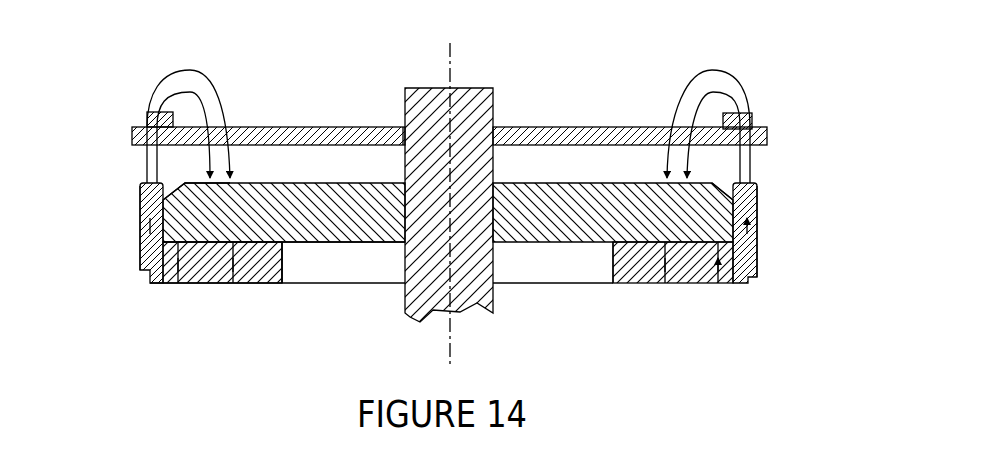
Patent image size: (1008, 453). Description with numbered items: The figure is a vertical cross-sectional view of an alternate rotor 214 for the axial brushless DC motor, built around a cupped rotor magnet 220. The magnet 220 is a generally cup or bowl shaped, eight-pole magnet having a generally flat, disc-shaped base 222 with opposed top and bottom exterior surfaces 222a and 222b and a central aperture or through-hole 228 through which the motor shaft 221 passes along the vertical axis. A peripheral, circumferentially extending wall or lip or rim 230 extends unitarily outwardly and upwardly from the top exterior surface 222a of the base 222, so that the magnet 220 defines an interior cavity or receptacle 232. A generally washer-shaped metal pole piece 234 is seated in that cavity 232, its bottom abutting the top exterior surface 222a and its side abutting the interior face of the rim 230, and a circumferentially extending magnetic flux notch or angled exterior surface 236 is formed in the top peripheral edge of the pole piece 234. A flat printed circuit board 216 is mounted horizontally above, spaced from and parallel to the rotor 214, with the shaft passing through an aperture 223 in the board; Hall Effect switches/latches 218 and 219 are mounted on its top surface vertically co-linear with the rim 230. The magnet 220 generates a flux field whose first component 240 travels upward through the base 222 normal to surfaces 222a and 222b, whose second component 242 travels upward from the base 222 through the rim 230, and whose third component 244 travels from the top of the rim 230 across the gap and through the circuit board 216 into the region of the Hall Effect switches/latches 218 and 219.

The rotor 214 is at (760, 262).
The printed circuit board 216 is at (579, 126).
The Hall Effect switch/latch 218 is at (150, 111).
The Hall Effect switch/latch 219 is at (745, 113).
The magnet 220 is at (137, 218).
The central post 221 is at (465, 100).
The base 222 is at (695, 285).
The top exterior surface 222a is at (150, 280).
The bottom exterior surface 222b is at (262, 284).
The aperture 223 is at (405, 138).
The central aperture 228 is at (302, 284).
The rim 230 is at (140, 200).
The interior cavity 232 is at (163, 205).
The metal pole piece 234 is at (560, 215).
The magnet flux notch 236 is at (757, 190).
The first magnetic flux field component 240 is at (158, 284).
The second magnetic flux field component 242 is at (148, 243).
The third magnetic flux field component 244 is at (213, 88).